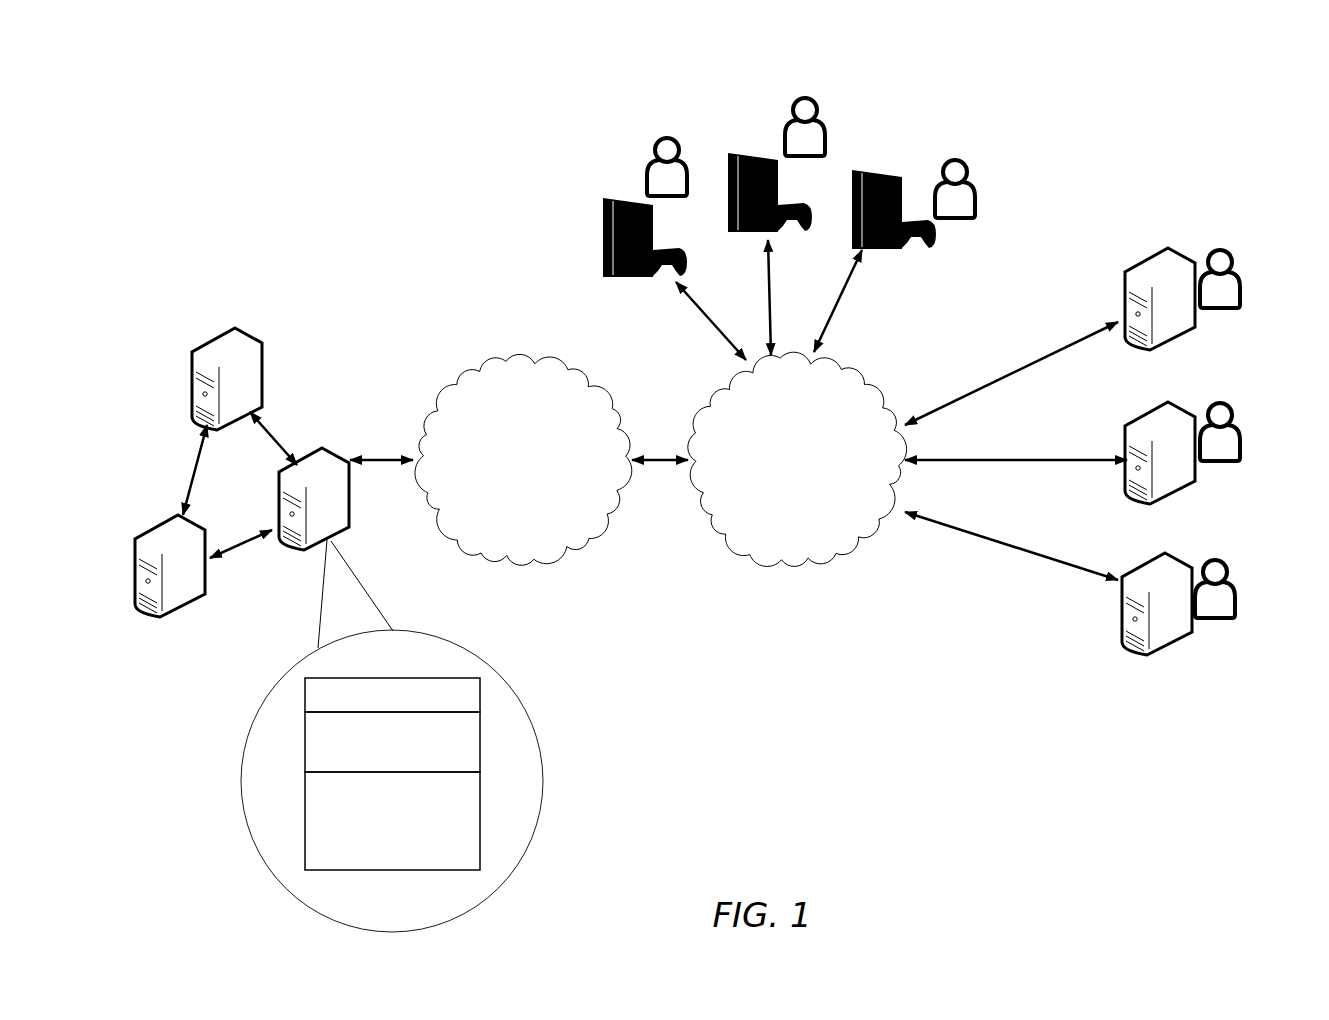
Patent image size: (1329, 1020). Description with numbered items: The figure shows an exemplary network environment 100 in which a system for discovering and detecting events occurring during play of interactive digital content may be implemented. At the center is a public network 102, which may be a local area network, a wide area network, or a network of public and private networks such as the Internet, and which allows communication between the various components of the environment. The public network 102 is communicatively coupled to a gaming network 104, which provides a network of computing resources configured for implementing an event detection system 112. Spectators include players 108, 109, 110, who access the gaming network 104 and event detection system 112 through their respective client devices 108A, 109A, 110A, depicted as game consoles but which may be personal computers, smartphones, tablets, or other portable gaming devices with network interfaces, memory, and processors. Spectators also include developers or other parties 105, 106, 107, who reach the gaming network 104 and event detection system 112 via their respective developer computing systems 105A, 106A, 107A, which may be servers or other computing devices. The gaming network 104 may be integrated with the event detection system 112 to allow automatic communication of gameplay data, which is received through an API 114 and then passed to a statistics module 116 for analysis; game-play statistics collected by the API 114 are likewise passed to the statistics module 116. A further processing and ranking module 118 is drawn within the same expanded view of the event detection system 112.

The network environment 100 is at (188, 40).
The public network 102 is at (797, 459).
The gaming network 104 is at (523, 459).
The developer 105 is at (1230, 255).
The developer computing system 105A is at (1152, 250).
The developer 106 is at (1230, 408).
The developer computing system 106A is at (1125, 428).
The developer 107 is at (1230, 568).
The developer computing system 107A is at (1165, 650).
The player 108 is at (655, 139).
The client device 108A is at (603, 225).
The player 109 is at (818, 106).
The client device 109A is at (762, 152).
The player 110 is at (972, 182).
The client device 110A is at (912, 253).
The event detection system 112 is at (263, 342).
The API 114 is at (480, 693).
The statistics module 116 is at (480, 740).
The processing/ranking module 118 is at (480, 820).